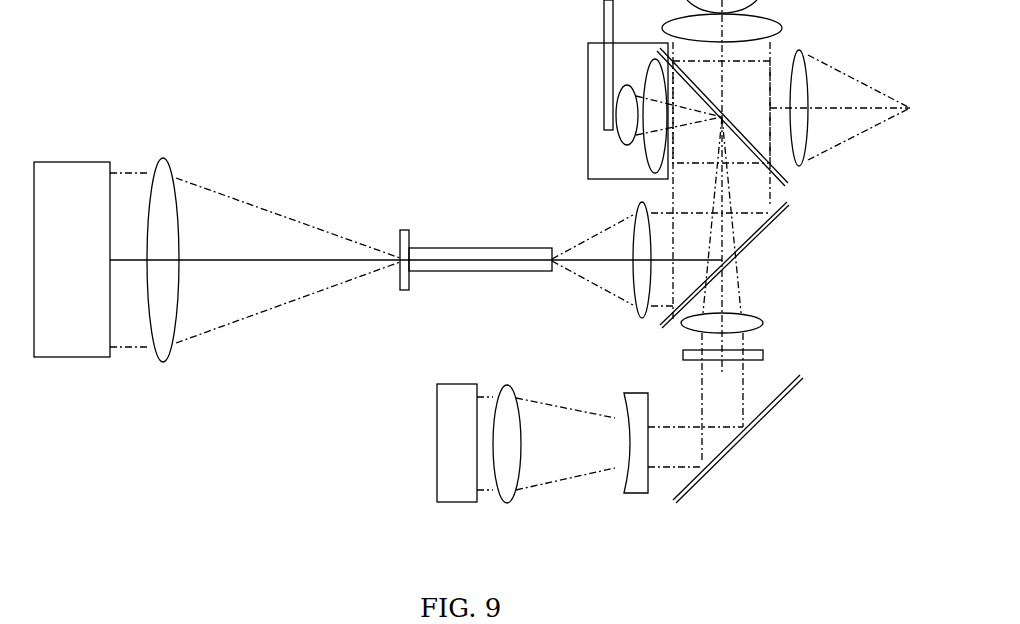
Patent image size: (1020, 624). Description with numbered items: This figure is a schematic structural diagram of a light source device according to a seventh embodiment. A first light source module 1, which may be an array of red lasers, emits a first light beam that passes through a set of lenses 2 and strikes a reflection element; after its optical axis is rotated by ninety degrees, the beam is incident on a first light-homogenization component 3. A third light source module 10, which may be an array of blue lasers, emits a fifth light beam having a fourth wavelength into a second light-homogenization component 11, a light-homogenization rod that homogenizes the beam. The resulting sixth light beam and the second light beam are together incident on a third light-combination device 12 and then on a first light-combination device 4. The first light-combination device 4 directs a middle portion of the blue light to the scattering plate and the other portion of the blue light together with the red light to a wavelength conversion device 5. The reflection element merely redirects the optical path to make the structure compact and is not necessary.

The first light source module 1 is at (458, 410).
The set of lenses 2 is at (508, 388).
The first light-homogenization component 3 is at (763, 353).
The first light-combination device 4 is at (770, 165).
The wavelength conversion device 5 is at (600, 142).
The third light source module 10 is at (78, 207).
The second light-homogenization component 11 is at (443, 257).
The third light-combination device 12 is at (760, 226).